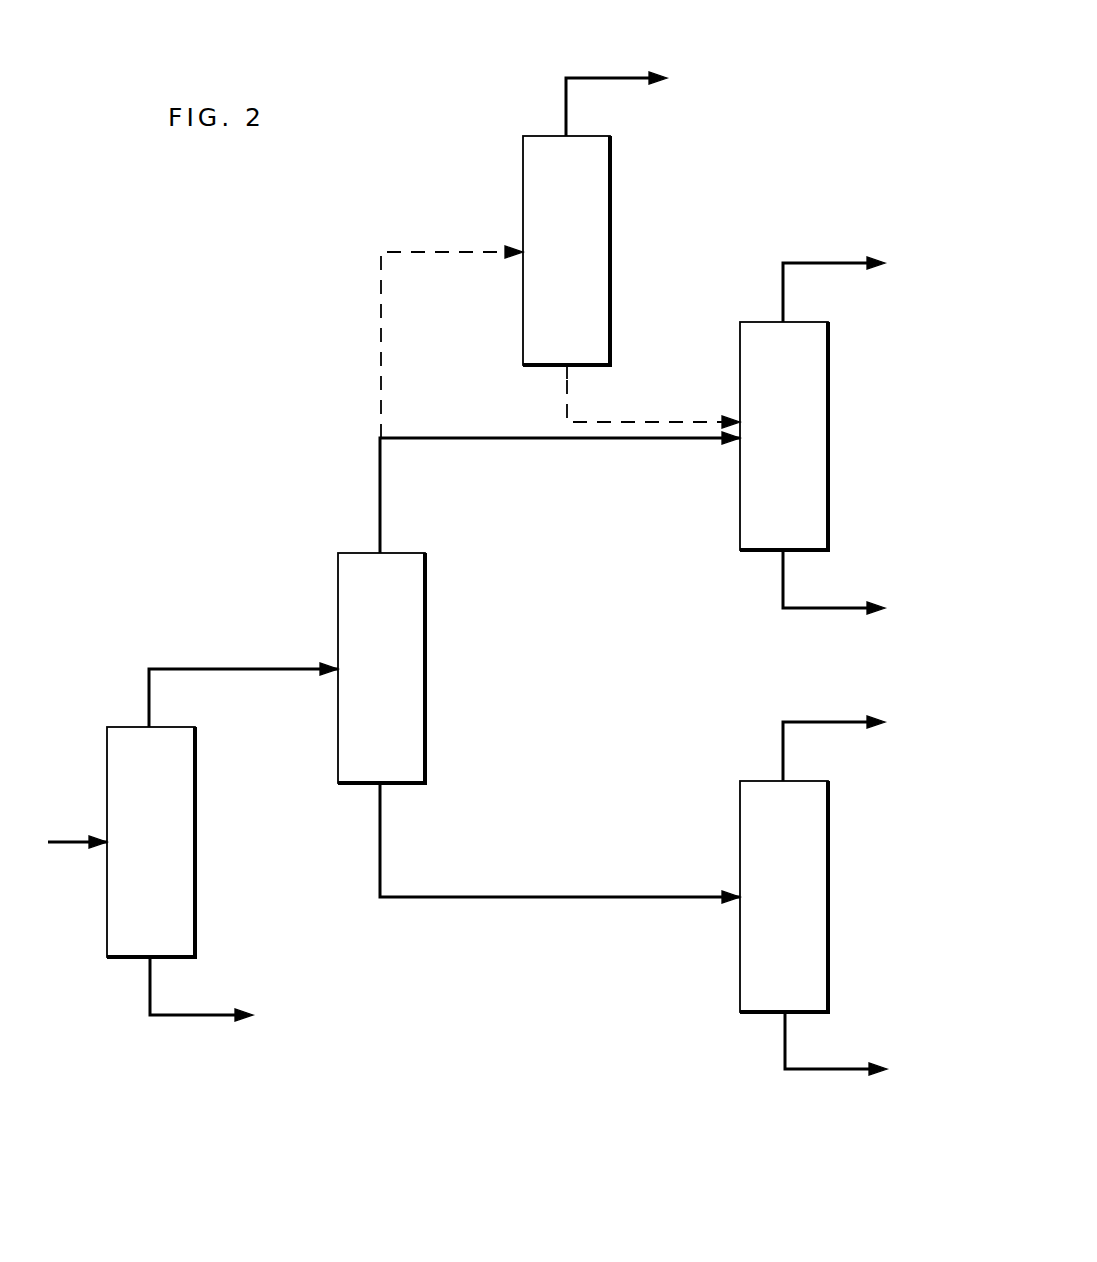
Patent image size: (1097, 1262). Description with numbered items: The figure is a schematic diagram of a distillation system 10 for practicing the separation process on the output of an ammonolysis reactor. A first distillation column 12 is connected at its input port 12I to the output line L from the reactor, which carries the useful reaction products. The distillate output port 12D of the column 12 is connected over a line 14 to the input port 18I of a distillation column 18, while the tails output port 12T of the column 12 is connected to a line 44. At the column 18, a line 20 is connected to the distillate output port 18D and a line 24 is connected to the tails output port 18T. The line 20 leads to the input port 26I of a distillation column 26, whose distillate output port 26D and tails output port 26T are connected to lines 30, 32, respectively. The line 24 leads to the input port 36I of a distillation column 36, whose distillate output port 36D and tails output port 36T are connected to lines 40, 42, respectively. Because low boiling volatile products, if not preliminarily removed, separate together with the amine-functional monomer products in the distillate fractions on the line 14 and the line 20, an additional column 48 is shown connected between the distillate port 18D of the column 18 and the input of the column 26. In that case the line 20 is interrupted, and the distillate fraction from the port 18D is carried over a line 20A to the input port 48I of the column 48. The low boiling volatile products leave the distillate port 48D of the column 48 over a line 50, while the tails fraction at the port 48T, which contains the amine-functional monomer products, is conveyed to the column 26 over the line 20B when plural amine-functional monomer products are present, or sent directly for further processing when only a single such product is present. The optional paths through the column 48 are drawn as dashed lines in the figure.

The distillation system 10 is at (780, 72).
The first distillation column 12 is at (167, 857).
The input port 12I is at (104, 850).
The distillate output port 12D is at (147, 724).
The tails output port 12T is at (148, 962).
The output line L is at (66, 840).
The line 14 is at (229, 668).
The line 44 is at (190, 1018).
The distillation column 18 is at (398, 684).
The input port 18I is at (335, 664).
The distillate output port 18D is at (378, 550).
The tails output port 18T is at (380, 796).
The line 20 is at (506, 440).
The line 20A is at (378, 330).
The line 20B is at (610, 420).
The line 24 is at (512, 896).
The distillation column 26 is at (803, 449).
The input port 26I is at (735, 446).
The distillate output port 26D is at (781, 320).
The tails output port 26T is at (780, 556).
The line 30 is at (818, 261).
The line 32 is at (830, 610).
The distillation column 36 is at (803, 919).
The input port 36I is at (738, 906).
The distillate output port 36D is at (781, 779).
The tails output port 36T is at (782, 1016).
The line 40 is at (832, 720).
The line 42 is at (830, 1072).
The additional column 48 is at (585, 271).
The input port 48I is at (516, 247).
The distillate port 48D is at (565, 132).
The port 48T is at (565, 375).
The line 50 is at (625, 77).